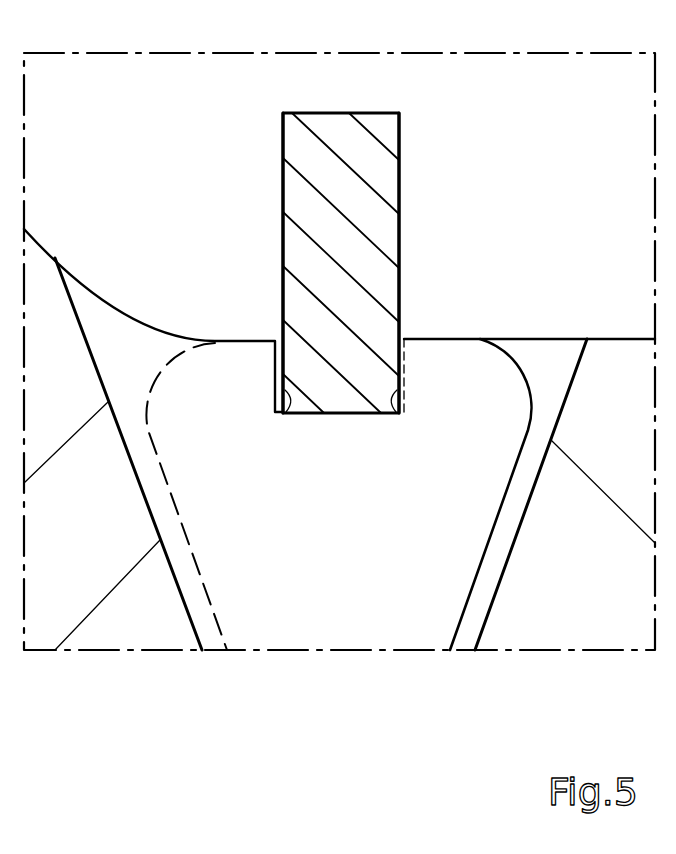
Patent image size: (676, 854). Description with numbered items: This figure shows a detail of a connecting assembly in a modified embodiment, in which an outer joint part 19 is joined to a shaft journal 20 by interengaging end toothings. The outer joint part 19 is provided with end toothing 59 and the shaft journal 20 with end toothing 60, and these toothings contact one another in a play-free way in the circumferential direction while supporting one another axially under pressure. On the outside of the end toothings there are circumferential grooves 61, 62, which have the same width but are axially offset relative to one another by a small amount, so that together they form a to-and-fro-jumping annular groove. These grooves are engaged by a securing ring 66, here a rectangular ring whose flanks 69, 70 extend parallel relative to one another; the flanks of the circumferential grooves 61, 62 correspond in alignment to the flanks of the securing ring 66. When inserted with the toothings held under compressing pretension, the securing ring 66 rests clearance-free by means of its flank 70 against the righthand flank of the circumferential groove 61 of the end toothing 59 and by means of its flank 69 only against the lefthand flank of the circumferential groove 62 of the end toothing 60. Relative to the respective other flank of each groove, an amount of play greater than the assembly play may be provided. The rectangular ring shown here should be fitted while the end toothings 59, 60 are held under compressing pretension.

The outer joint part 19 is at (47, 290).
The shaft journal 20 is at (617, 357).
The end toothing 59 is at (122, 337).
The end toothing 60 is at (547, 353).
The circumferential groove 61 is at (287, 414).
The circumferential groove 62 is at (387, 414).
The securing ring 66 is at (332, 142).
The flank 69 is at (283, 208).
The flank 70 is at (401, 170).